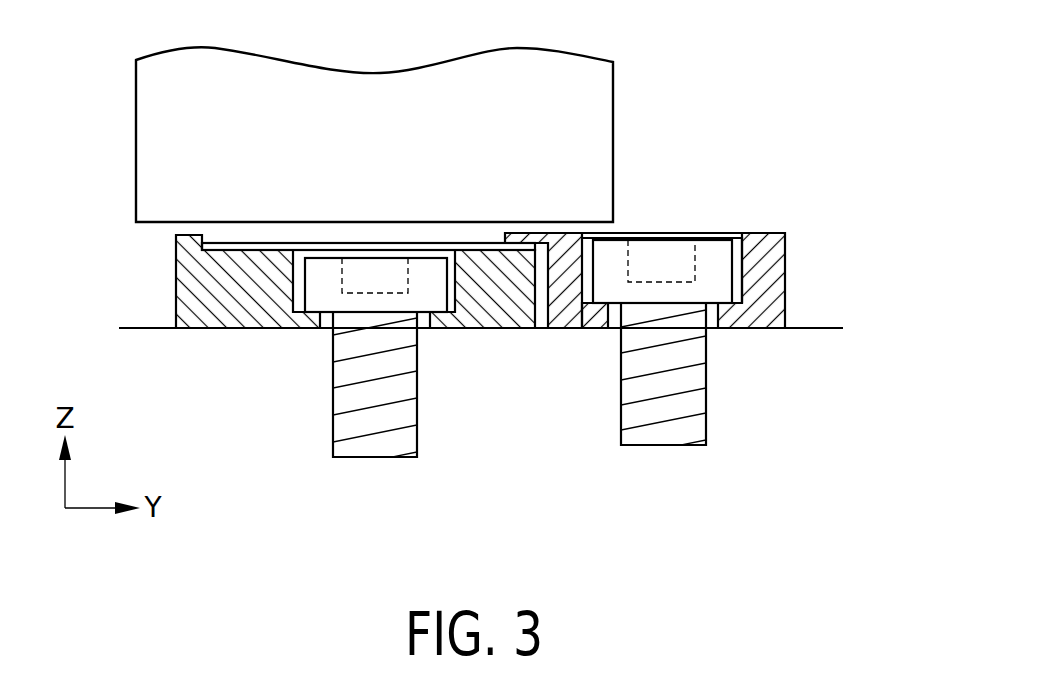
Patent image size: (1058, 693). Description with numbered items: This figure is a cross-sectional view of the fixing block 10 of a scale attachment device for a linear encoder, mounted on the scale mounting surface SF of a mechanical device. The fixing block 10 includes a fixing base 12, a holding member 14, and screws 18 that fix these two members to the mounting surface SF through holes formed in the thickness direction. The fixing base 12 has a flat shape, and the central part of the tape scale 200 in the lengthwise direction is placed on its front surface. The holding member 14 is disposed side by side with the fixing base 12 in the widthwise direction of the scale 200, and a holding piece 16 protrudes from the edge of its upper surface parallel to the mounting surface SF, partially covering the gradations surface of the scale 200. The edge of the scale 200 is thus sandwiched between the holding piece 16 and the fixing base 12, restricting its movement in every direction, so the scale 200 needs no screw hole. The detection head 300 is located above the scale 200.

The fixing block 10 is at (515, 462).
The fixing base 12 is at (222, 319).
The holding member 14 is at (760, 313).
The holding piece 16 is at (525, 228).
The screw 18 is at (333, 430).
The tape scale 200 is at (217, 238).
The detection head 300 is at (613, 100).
The scale mounting surface SF is at (817, 326).